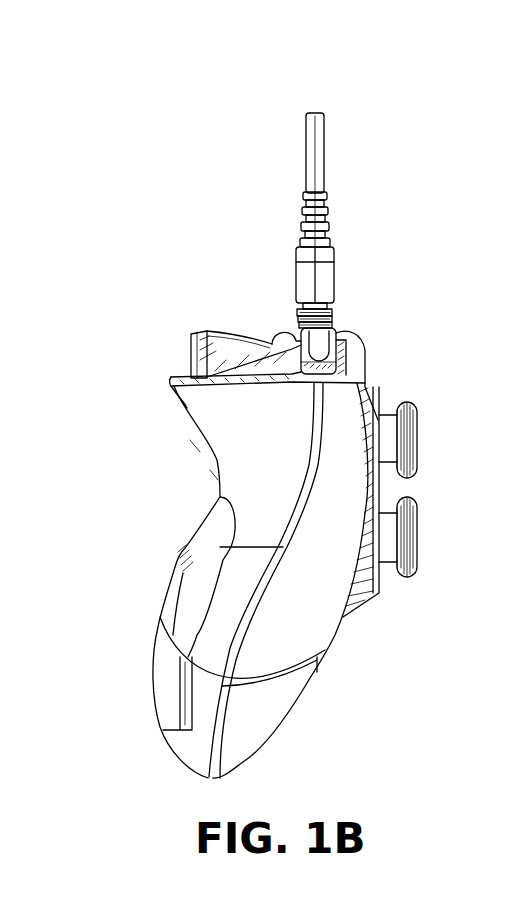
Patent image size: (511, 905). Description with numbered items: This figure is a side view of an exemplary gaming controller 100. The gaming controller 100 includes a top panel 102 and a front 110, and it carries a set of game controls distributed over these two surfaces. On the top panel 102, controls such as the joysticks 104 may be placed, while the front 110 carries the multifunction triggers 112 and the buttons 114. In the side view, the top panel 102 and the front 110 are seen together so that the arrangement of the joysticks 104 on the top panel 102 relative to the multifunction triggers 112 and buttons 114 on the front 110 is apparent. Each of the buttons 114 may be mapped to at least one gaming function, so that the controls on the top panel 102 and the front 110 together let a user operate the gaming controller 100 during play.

The gaming controller 100 is at (174, 90).
The top panel 102 is at (343, 650).
The joysticks 104 is at (416, 538).
The front 110 is at (347, 325).
The multifunction triggers 112 is at (210, 331).
The buttons 114 is at (322, 350).